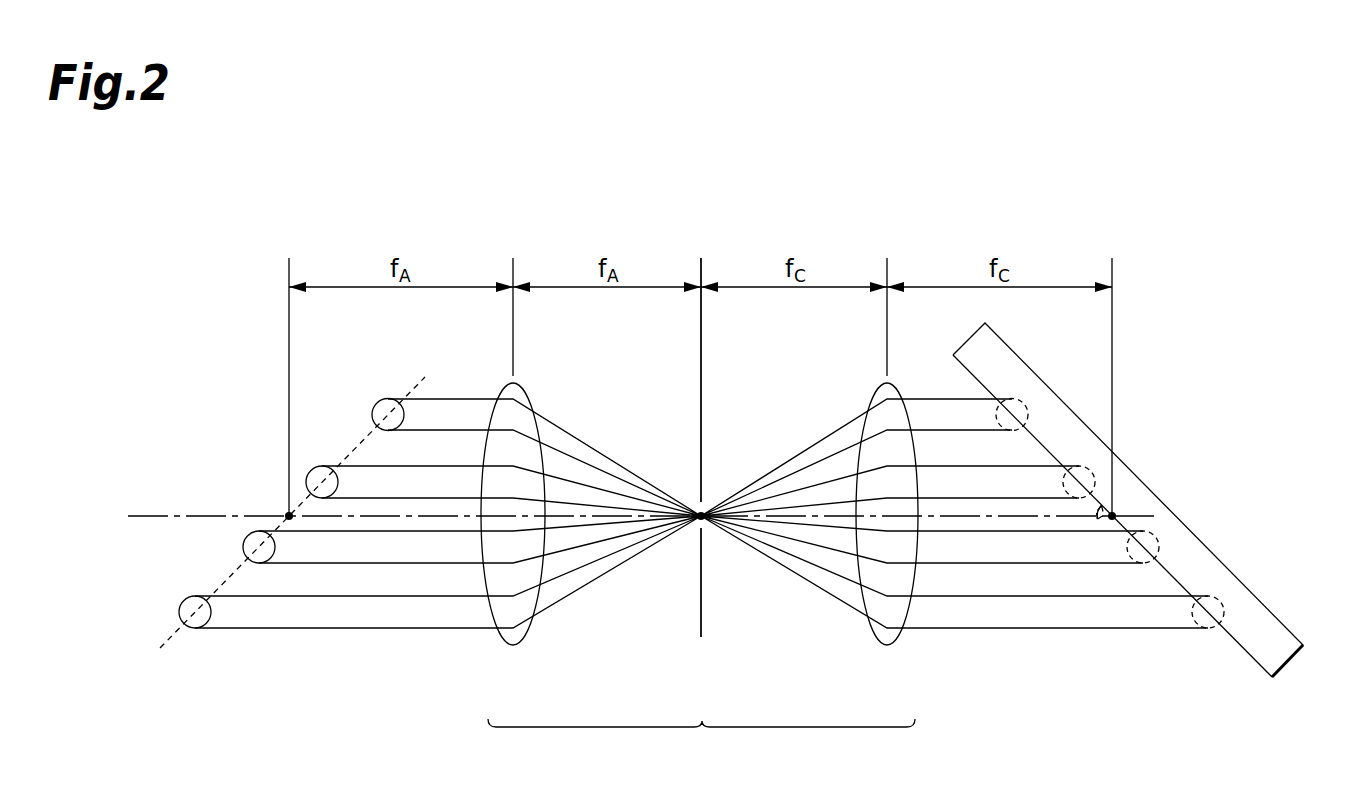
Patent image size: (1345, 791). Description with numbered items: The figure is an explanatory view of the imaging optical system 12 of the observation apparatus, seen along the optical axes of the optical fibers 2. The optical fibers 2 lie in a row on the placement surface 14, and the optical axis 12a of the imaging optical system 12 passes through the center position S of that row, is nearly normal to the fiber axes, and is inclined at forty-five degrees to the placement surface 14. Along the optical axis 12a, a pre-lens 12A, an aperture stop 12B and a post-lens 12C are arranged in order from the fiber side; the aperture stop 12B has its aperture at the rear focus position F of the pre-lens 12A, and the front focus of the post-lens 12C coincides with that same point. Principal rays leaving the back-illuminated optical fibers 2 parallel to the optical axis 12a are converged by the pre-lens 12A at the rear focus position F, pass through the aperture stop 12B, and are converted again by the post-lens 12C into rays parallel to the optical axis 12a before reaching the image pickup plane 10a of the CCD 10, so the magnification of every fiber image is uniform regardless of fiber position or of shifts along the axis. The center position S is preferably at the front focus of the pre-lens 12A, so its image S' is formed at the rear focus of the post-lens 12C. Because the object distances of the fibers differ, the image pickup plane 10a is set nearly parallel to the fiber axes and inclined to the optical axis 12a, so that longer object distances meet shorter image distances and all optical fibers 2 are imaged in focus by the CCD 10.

The optical fibers 2 is at (309, 467).
The CCD 10 is at (1293, 658).
The image pickup plane 10a is at (1245, 652).
The imaging optical system 12 is at (701, 740).
The pre-lens 12A is at (513, 646).
The aperture stop 12B is at (701, 639).
The post-lens 12C is at (888, 646).
The optical axis 12a is at (150, 515).
The placement surface 14 is at (413, 382).
The center position S is at (251, 491).
The image of the center position S' is at (1182, 510).
The rear focus position F is at (698, 519).